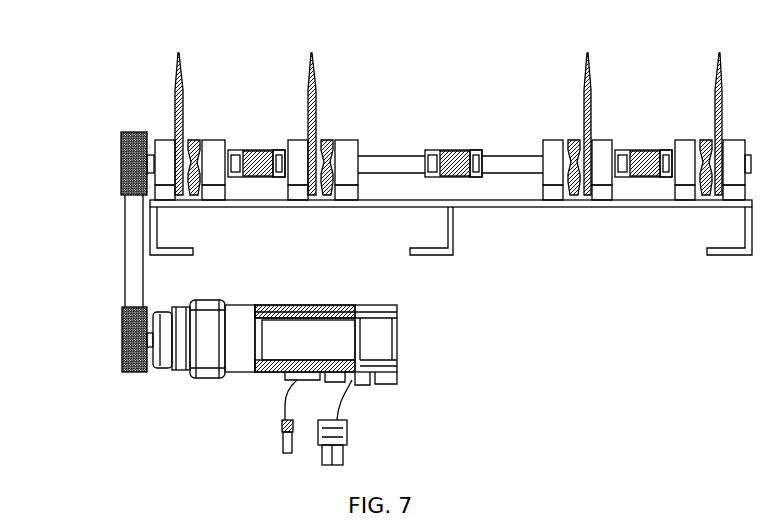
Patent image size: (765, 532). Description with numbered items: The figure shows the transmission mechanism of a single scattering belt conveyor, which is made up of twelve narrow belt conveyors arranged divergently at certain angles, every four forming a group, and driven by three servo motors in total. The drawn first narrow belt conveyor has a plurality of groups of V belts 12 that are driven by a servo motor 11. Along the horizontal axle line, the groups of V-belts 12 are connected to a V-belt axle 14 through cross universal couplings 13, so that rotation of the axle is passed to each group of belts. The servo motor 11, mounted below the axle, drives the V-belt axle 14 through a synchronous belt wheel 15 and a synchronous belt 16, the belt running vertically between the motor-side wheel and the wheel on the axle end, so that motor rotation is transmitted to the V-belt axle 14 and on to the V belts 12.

The servo motor 11 is at (248, 364).
The V belts 12 is at (176, 92).
The cross universal couplings 13 is at (257, 150).
The V-belt axle 14 is at (121, 148).
The synchronous belt wheel 15 is at (122, 352).
The synchronous belt 16 is at (125, 250).